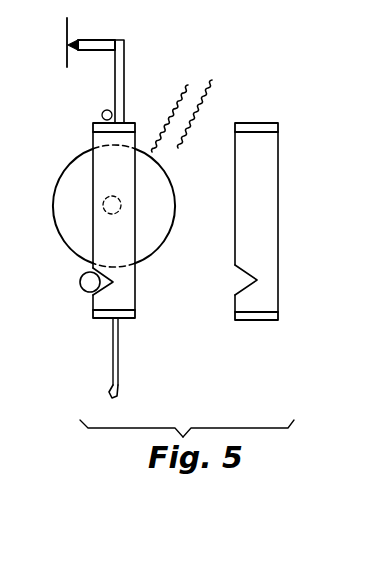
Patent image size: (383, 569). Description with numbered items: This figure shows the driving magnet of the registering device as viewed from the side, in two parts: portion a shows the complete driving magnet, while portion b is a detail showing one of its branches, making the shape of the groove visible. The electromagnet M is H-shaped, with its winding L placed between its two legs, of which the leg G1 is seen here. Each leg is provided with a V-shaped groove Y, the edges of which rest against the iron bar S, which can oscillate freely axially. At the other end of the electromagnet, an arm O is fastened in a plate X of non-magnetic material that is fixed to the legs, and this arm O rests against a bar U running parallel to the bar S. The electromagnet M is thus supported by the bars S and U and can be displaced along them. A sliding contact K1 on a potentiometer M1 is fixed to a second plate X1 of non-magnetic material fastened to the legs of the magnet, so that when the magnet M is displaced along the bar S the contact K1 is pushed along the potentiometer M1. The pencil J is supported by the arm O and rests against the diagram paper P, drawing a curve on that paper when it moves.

The diagram paper P is at (66, 28).
The pencil J is at (92, 39).
The arm O is at (124, 94).
The bar U is at (102, 113).
The plate X is at (130, 127).
The leg G1 is at (118, 182).
The winding L is at (152, 228).
The electromagnet M is at (122, 203).
The iron bar S is at (80, 284).
The V-shaped groove Y is at (114, 284).
The plate X1 is at (105, 317).
The sliding contact K1 is at (118, 345).
The potentiometer M1 is at (108, 390).
The region a is at (131, 423).
The region b is at (238, 422).